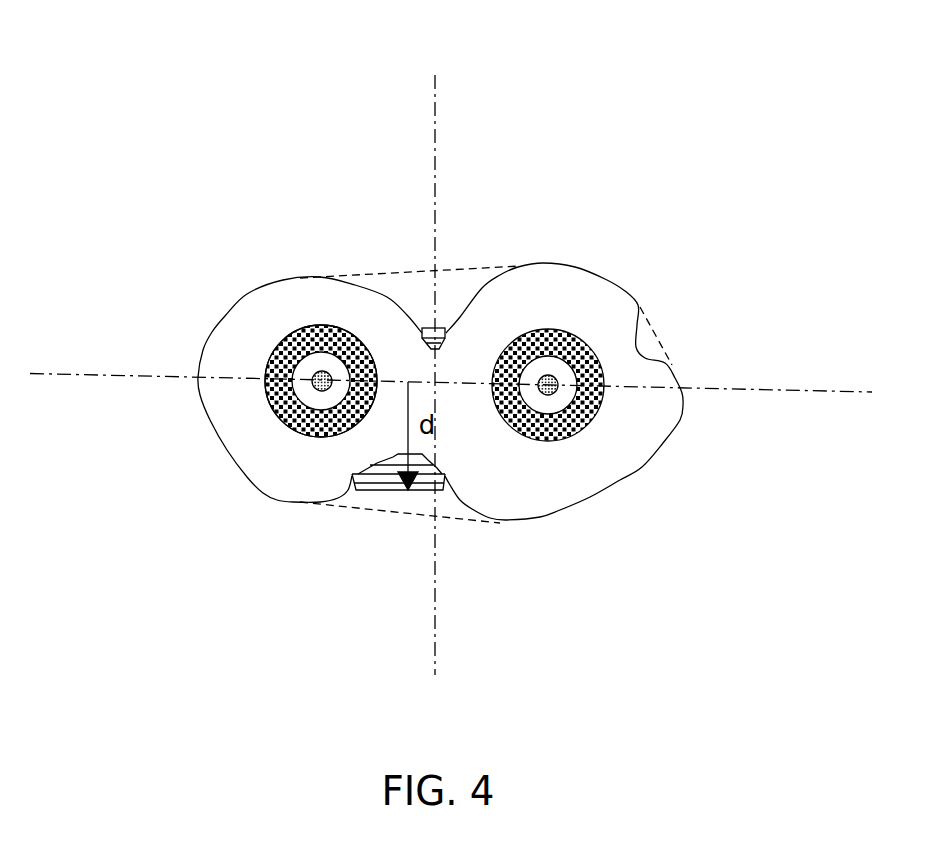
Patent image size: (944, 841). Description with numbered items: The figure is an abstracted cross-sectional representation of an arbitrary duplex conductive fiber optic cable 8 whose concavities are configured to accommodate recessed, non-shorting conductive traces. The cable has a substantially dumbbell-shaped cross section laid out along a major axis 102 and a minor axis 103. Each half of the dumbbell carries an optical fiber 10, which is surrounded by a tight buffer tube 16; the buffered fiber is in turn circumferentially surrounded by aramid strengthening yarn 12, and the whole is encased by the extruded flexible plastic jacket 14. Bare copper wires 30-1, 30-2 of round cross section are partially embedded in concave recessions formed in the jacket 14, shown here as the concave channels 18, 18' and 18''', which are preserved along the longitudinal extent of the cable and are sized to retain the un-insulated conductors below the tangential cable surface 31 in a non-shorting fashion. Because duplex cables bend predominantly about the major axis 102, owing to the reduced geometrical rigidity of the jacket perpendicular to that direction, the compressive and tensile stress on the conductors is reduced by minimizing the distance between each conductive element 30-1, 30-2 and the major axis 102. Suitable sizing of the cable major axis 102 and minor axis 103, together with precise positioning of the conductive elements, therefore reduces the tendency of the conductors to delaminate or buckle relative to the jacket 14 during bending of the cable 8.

The duplex fiber optic cable 8 is at (648, 476).
The optical fiber 10 is at (322, 381).
The aramid strengthening yarn 12 is at (270, 410).
The jacket 14 is at (277, 472).
The tight buffer tube 16 is at (266, 372).
The concave channel 18 is at (496, 223).
The concave channel 18' is at (380, 591).
The concave channel 18''' is at (693, 269).
The bare copper wire 30-1 is at (432, 318).
The bare copper wire 30-2 is at (393, 490).
The tangential cable surface 31 is at (360, 270).
The major axis 102 is at (474, 357).
The minor axis 103 is at (432, 344).